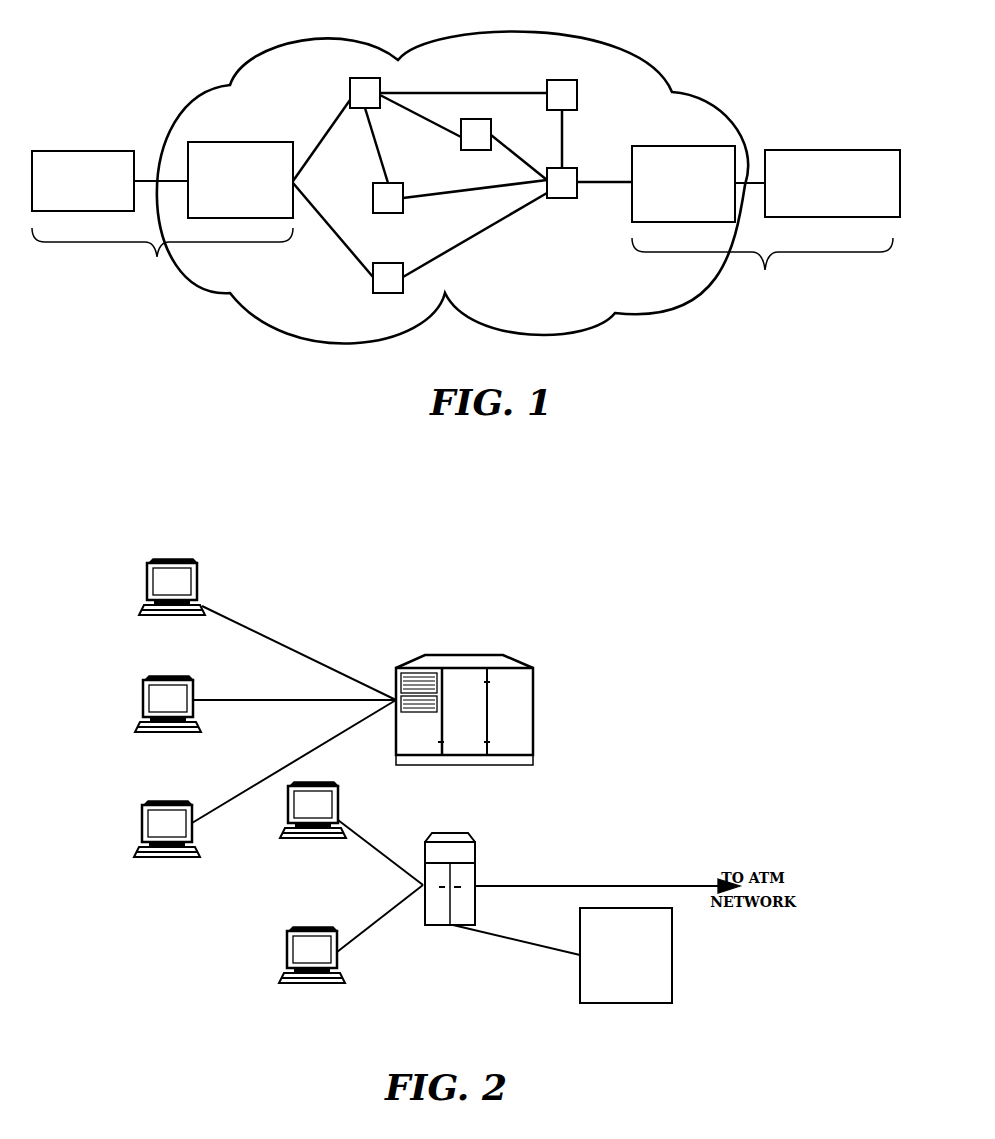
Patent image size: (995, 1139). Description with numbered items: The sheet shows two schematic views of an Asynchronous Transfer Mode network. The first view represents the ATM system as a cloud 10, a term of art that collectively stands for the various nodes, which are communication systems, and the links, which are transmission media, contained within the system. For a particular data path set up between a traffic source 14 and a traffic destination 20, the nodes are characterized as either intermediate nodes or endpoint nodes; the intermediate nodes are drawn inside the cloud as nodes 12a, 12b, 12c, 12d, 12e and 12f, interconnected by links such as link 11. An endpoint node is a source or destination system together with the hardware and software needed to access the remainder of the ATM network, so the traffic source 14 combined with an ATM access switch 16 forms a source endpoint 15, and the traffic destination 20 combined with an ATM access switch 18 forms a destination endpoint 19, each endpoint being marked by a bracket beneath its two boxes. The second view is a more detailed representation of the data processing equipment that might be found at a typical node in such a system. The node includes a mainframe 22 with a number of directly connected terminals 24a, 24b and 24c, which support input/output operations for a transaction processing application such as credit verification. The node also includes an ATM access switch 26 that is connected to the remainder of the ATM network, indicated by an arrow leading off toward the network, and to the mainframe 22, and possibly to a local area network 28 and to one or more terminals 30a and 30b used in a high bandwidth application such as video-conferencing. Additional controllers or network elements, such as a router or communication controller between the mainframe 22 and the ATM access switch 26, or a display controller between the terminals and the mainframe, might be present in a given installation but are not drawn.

In FIG. 1, the cloud 10 is at (650, 62).
In FIG. 1, the link 11 is at (433, 90).
In FIG. 1, the intermediate node 12a is at (352, 78).
In FIG. 1, the intermediate node 12b is at (557, 76).
In FIG. 1, the intermediate node 12c is at (477, 152).
In FIG. 1, the intermediate node 12d is at (372, 198).
In FIG. 1, the intermediate node 12e is at (562, 158).
In FIG. 1, the intermediate node 12f is at (387, 263).
In FIG. 1, the traffic source 14 is at (83, 148).
In FIG. 1, the source endpoint 15 is at (162, 260).
In FIG. 1, the ATM access switch 16 is at (230, 140).
In FIG. 1, the ATM access switch 18 is at (655, 145).
In FIG. 1, the destination endpoint 19 is at (762, 270).
In FIG. 1, the traffic destination 20 is at (798, 148).
In FIG. 2, the mainframe 22 is at (533, 723).
In FIG. 2, the terminal 24a is at (147, 583).
In FIG. 2, the terminal 24b is at (143, 700).
In FIG. 2, the terminal 24c is at (142, 825).
In FIG. 2, the ATM access switch 26 is at (448, 828).
In FIG. 2, the local area network 28 is at (673, 964).
In FIG. 2, the terminal 30a is at (312, 845).
In FIG. 2, the terminal 30b is at (287, 947).